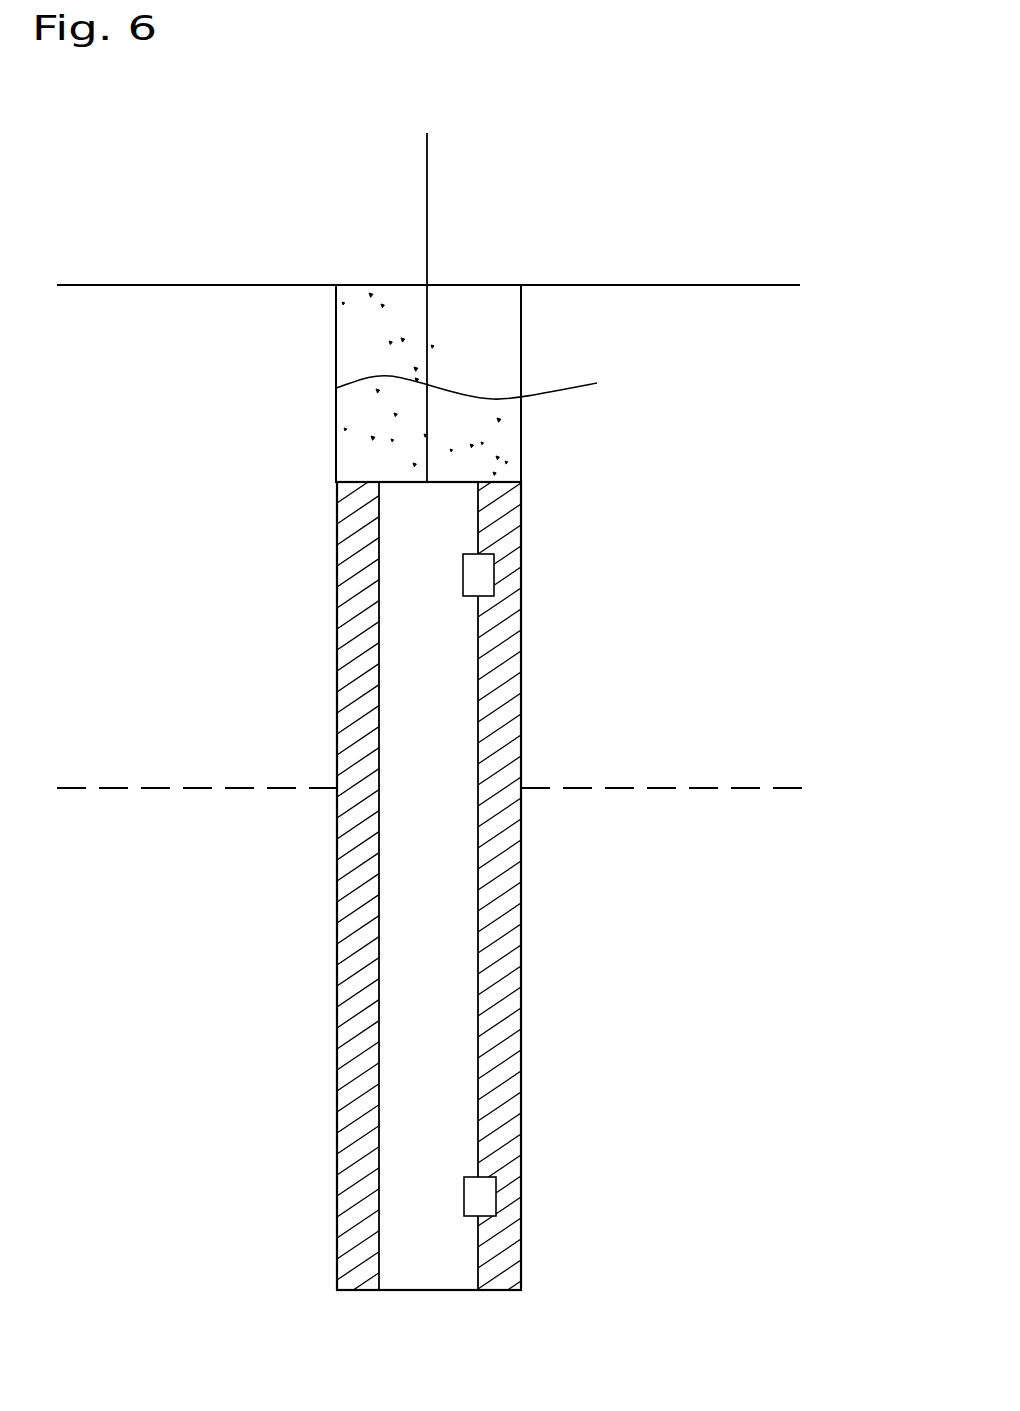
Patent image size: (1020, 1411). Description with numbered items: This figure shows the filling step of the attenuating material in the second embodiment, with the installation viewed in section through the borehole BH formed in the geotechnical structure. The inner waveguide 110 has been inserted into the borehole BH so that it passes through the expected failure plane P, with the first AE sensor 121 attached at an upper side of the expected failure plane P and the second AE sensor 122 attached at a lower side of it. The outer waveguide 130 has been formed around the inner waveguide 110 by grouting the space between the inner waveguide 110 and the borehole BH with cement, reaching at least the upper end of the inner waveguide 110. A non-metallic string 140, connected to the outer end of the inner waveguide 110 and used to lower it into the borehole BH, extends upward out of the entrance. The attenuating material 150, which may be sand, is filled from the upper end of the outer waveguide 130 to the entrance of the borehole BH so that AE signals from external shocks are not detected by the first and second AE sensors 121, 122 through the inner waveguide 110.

The string 140 is at (427, 210).
The attenuating material 150 is at (490, 342).
The borehole BH is at (499, 383).
The inner waveguide 110 is at (528, 888).
The first AE sensor 121 is at (485, 578).
The second AE sensor 122 is at (485, 1192).
The outer waveguide 130 is at (510, 1000).
The expected failure plane P is at (661, 788).